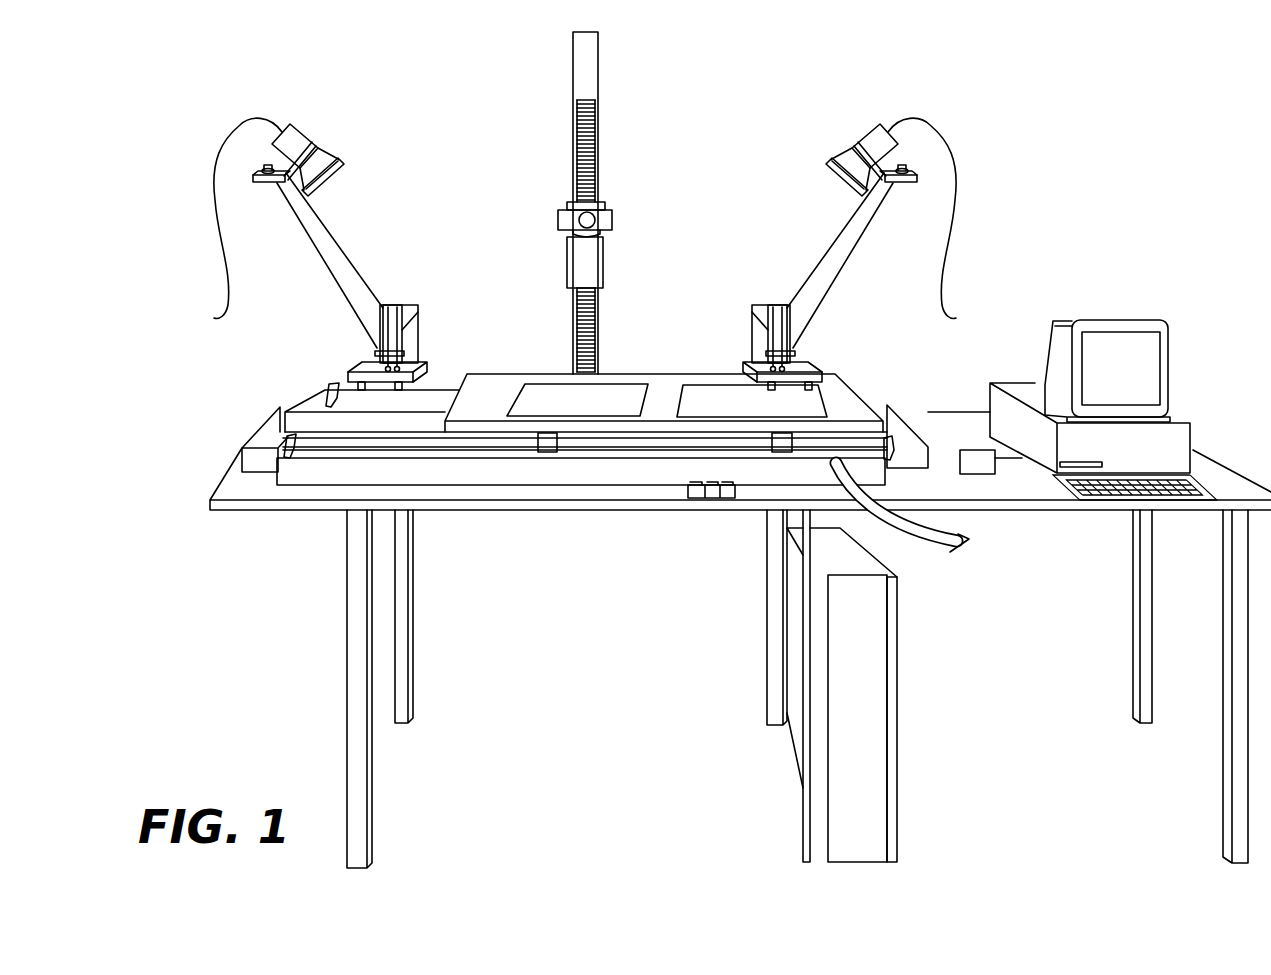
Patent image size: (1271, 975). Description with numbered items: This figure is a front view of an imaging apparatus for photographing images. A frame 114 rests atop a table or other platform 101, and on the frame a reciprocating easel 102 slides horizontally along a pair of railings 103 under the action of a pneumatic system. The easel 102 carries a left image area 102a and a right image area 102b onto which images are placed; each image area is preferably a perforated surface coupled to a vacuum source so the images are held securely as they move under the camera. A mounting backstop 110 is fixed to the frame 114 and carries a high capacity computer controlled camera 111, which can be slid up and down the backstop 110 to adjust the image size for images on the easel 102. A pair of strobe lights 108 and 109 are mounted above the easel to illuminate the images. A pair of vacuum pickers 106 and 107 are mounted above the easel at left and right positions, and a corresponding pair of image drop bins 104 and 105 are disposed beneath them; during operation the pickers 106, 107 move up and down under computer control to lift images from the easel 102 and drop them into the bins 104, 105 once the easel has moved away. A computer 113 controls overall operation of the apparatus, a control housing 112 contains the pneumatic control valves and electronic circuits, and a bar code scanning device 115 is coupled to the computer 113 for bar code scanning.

The table 101 is at (262, 507).
The reciprocating easel 102 is at (625, 373).
The left image area 102a is at (532, 390).
The right image area 102b is at (718, 403).
The railings 103 is at (328, 392).
The image drop bin 104 is at (243, 443).
The image drop bin 105 is at (903, 420).
The vacuum picker 106 is at (433, 306).
The vacuum picker 107 is at (768, 292).
The strobe light 108 is at (356, 129).
The strobe light 109 is at (840, 149).
The mounting backstop 110 is at (586, 79).
The camera 111 is at (613, 219).
The control housing 112 is at (893, 633).
The computer 113 is at (1132, 320).
The frame 114 is at (524, 475).
The bar code scanning device 115 is at (978, 471).